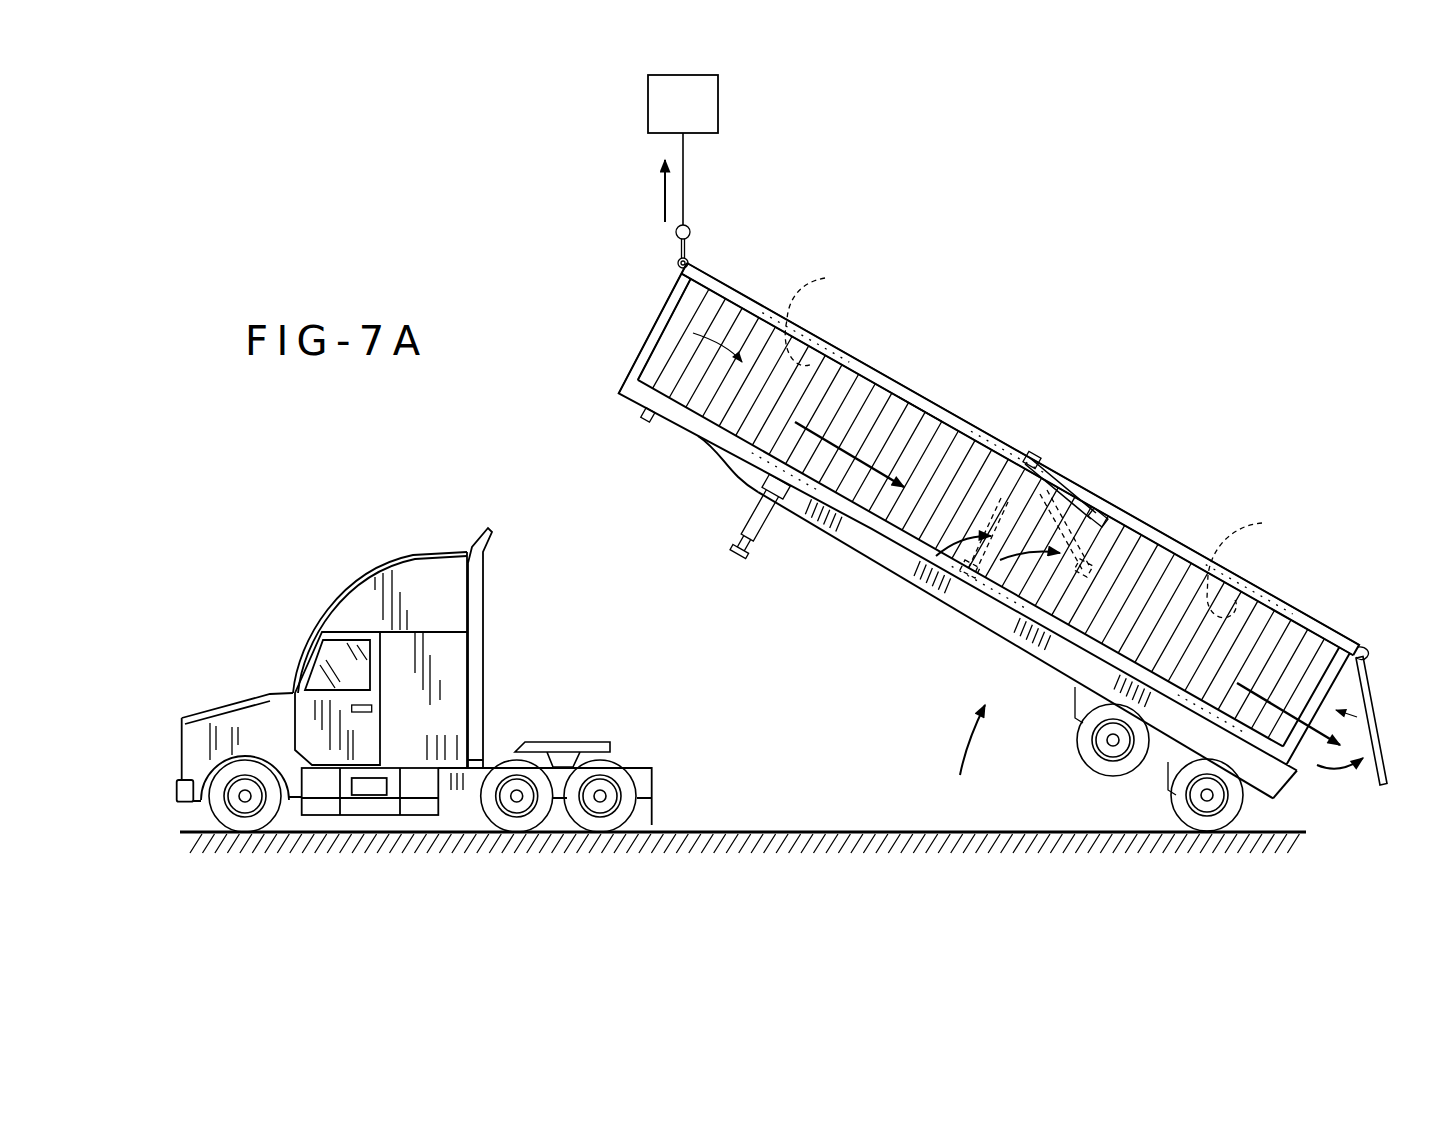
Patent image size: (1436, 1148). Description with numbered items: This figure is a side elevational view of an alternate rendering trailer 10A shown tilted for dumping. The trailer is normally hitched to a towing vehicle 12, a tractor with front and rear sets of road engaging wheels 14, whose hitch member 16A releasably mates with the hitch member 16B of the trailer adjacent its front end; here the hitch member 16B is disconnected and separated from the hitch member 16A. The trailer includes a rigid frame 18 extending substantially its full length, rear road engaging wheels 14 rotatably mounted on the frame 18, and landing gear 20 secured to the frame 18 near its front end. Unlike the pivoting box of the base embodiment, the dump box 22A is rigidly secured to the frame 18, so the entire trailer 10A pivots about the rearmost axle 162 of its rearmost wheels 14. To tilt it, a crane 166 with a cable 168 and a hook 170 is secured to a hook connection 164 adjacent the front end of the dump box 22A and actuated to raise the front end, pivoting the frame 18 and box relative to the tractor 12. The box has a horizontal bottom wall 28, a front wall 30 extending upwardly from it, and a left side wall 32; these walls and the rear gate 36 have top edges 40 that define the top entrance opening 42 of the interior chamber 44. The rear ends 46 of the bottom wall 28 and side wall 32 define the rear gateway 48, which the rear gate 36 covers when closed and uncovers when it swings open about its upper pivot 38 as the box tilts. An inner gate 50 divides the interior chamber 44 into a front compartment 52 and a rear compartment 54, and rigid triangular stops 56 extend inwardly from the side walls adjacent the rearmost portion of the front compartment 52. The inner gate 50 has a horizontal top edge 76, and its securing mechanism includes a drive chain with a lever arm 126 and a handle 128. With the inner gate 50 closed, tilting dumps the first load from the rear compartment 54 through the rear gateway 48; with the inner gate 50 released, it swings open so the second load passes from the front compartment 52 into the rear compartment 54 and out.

The rendering trailer 10A is at (1123, 430).
The towing vehicle 12 is at (258, 686).
The road engaging wheels 14 is at (249, 825).
The hitch member 16A is at (513, 747).
The hitch member 16B is at (657, 423).
The frame 18 is at (858, 562).
The landing gear 20 is at (753, 507).
The dump box 22A is at (823, 332).
The bottom wall 28 is at (740, 452).
The front wall 30 is at (670, 305).
The left side wall 32 is at (693, 372).
The rear gate 36 is at (1385, 777).
The pivot 38 is at (1366, 645).
The top edge 40 is at (705, 253).
The top entrance opening 42 is at (930, 385).
The interior chamber 44 is at (693, 333).
The rear ends 46 is at (1337, 688).
The rear gateway 48 is at (1357, 717).
The inner gate 50 is at (1058, 450).
The front compartment 52 is at (825, 278).
The rear compartment 54 is at (1262, 523).
The triangular stops 56 is at (996, 520).
The top edge 76 is at (1027, 454).
The lever arm 126 is at (1087, 503).
The handle 128 is at (1113, 522).
The rearmost axle 162 is at (1205, 797).
The hook connection 164 is at (677, 265).
The crane 166 is at (720, 103).
The cable 168 is at (683, 190).
The hook 170 is at (675, 247).